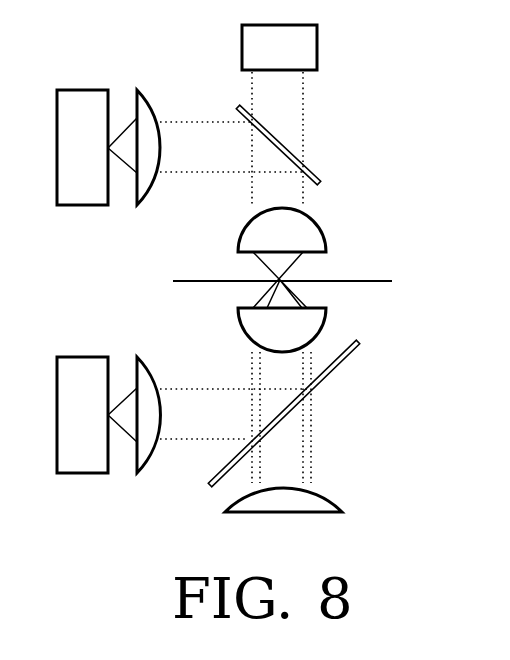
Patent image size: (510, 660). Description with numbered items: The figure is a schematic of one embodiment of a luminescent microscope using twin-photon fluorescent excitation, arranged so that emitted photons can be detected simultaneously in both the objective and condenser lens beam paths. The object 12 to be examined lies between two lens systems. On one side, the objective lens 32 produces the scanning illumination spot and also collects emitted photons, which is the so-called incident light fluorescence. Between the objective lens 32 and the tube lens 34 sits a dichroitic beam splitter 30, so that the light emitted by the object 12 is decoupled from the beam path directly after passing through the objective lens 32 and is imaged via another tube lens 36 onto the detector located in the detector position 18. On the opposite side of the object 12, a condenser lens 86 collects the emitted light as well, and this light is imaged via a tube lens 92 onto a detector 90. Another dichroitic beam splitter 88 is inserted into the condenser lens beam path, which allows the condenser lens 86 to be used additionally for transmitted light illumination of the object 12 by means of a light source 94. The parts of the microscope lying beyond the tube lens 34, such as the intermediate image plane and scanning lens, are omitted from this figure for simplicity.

The object 12 is at (307, 282).
The detector position 18 is at (80, 465).
The dichroitic beam splitter 30 is at (310, 427).
The objective lens 32 is at (313, 333).
The tube lens 34 is at (318, 497).
The another tube lens 36 is at (145, 458).
The condenser lens 86 is at (308, 232).
The another dichroitic beam splitter 88 is at (310, 135).
The detector 90 is at (60, 140).
The tube lens 92 is at (145, 101).
The light source 94 is at (315, 62).